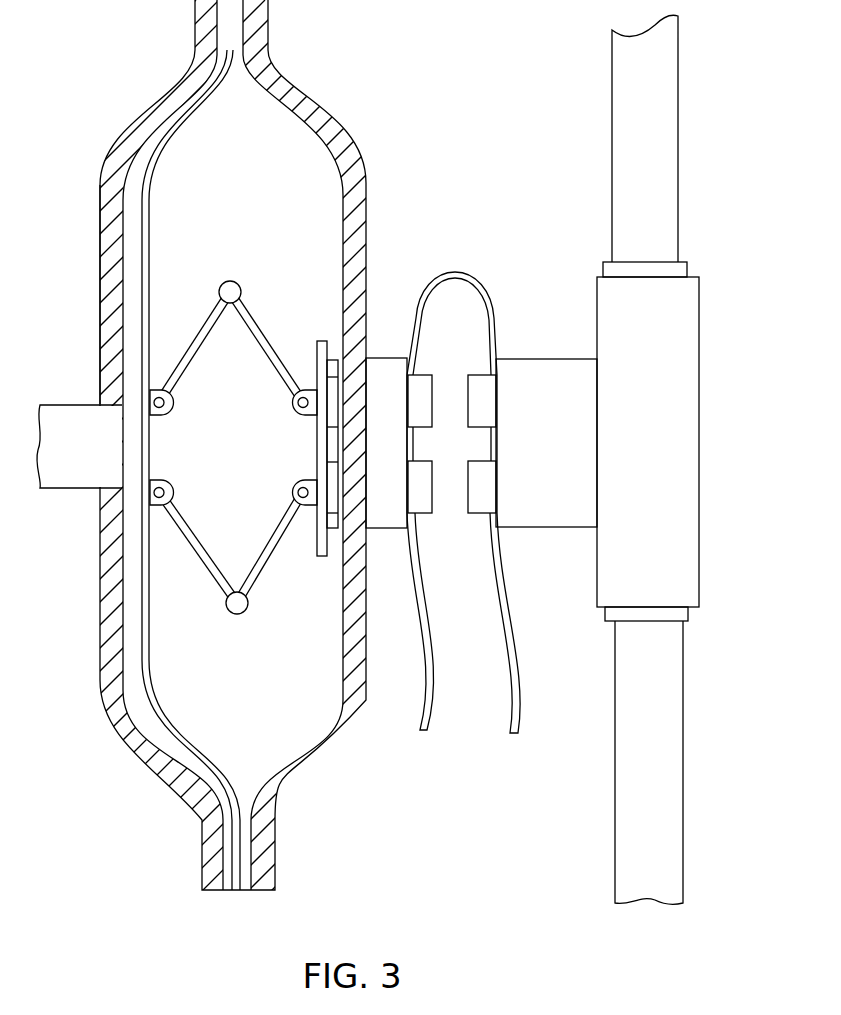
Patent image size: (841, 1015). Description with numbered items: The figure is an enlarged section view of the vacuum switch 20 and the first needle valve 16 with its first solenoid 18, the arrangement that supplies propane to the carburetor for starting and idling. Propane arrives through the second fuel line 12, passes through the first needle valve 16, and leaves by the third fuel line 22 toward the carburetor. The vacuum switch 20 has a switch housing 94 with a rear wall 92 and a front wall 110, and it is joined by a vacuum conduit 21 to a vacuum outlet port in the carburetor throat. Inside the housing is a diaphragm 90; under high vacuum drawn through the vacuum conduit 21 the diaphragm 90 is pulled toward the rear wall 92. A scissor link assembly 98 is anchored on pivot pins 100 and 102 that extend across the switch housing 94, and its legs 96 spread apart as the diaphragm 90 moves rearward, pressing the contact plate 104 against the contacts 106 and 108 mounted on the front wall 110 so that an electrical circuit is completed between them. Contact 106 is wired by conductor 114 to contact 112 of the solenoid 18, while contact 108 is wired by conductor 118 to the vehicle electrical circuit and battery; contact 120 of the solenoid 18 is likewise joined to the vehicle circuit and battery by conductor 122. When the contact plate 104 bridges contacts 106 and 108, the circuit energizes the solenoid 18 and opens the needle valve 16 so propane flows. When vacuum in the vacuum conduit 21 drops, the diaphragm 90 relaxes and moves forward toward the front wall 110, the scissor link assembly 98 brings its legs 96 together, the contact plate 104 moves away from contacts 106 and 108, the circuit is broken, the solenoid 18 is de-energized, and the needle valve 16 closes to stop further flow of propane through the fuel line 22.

The second fuel line 12 is at (615, 804).
The first needle valve 16 is at (699, 356).
The first solenoid 18 is at (544, 358).
The vacuum switch 20 is at (368, 183).
The vacuum conduit 21 is at (57, 490).
The third fuel line 22 is at (679, 118).
The diaphragm 90 is at (152, 232).
The rear wall 92 is at (100, 192).
The switch housing 94 is at (100, 311).
The legs 96 is at (260, 342).
The scissor link assembly 98 is at (275, 558).
The pivot pin 100 is at (237, 615).
The pivot pin 102 is at (236, 283).
The contact plate 104 is at (318, 341).
The contact 106 is at (432, 403).
The contact 108 is at (433, 513).
The front wall 110 is at (368, 262).
The contact 112 is at (478, 403).
The conductor 114 is at (457, 272).
The conductor 118 is at (433, 692).
The contact 120 is at (479, 493).
The conductor 122 is at (517, 653).